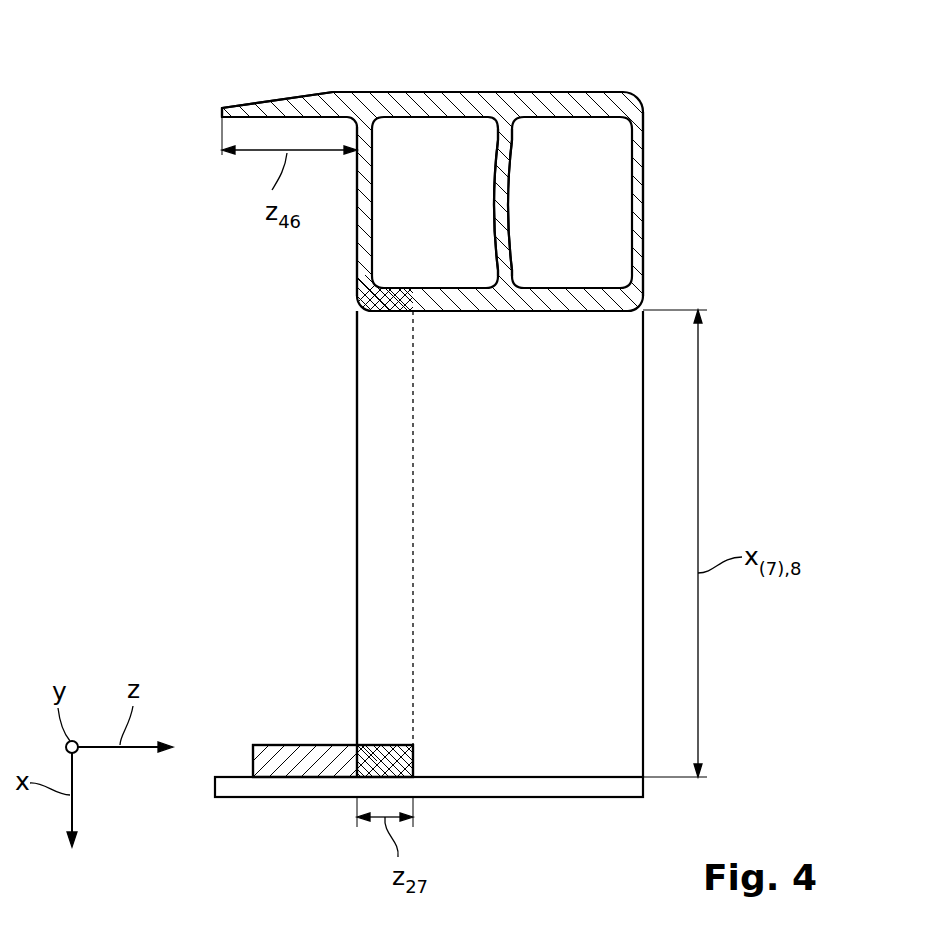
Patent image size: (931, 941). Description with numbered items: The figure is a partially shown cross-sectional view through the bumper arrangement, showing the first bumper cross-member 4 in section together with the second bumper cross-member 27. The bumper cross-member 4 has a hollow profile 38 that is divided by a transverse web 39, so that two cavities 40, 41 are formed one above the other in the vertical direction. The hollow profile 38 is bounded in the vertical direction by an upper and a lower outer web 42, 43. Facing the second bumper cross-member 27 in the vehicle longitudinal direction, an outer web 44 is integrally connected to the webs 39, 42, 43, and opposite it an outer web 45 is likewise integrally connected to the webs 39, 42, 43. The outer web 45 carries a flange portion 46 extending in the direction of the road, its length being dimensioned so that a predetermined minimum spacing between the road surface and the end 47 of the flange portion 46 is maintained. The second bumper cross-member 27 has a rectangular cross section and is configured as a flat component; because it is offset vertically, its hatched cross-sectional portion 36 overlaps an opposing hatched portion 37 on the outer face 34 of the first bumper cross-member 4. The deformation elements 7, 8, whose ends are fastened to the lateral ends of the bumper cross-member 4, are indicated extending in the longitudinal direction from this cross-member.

The bumper cross-member 4 is at (434, 209).
The deformation element 7 is at (302, 544).
The deformation element 8 is at (357, 560).
The second bumper cross-member 27 is at (341, 706).
The outer face 34 is at (500, 350).
The cross-sectional portion 36 is at (377, 753).
The opposing portion 37 is at (360, 302).
The hollow profile 38 is at (434, 210).
The transverse web 39 is at (503, 145).
The cavity 40 is at (452, 211).
The cavity 41 is at (587, 211).
The outer web 42 is at (360, 250).
The outer web 43 is at (641, 242).
The outer web 44 is at (540, 312).
The outer web 45 is at (575, 102).
The flange portion 46 is at (290, 98).
The end of the flange portion 47 is at (222, 110).